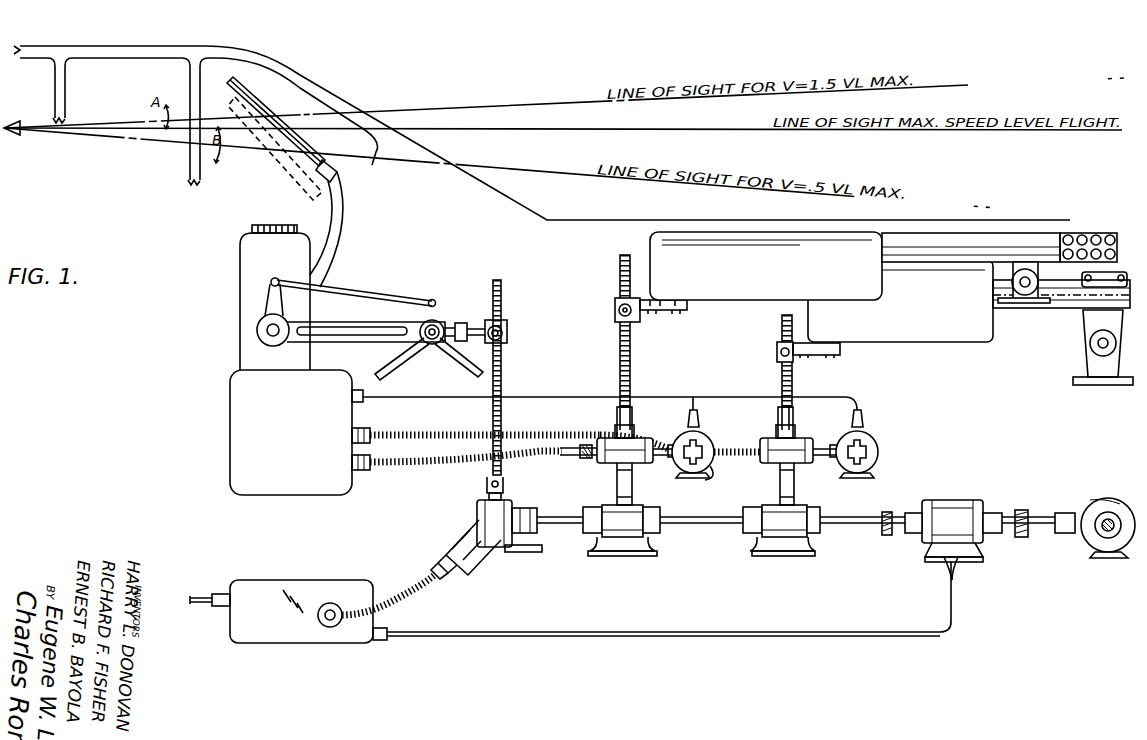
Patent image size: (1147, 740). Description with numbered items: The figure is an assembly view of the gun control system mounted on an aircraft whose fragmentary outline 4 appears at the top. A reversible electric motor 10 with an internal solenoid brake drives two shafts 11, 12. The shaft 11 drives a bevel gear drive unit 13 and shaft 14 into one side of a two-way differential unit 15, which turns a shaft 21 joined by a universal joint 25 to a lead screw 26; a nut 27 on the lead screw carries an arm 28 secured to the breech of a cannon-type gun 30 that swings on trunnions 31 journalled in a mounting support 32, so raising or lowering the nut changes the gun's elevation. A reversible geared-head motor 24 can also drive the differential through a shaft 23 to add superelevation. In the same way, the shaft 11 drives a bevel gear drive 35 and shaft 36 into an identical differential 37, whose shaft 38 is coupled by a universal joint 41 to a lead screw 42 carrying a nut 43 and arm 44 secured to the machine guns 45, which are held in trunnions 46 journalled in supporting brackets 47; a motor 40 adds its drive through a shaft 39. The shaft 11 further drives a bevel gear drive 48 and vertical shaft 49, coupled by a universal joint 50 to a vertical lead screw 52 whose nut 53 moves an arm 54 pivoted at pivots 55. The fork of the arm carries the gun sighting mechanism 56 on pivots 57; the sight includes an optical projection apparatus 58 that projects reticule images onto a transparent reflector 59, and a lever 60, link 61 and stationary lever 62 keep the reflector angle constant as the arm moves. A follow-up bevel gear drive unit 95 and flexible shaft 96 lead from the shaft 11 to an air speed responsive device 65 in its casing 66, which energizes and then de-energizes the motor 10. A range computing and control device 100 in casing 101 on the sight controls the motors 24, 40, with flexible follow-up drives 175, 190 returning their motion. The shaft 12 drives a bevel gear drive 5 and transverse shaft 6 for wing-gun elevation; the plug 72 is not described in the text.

The fragmentary outline of an aircraft 4 is at (306, 80).
The transparent reflector 59 is at (262, 108).
The gun sighting mechanism 56 is at (337, 302).
The optical projection apparatus 58 is at (240, 270).
The pivots 57 is at (255, 336).
The lever 60 is at (268, 282).
The link 61 is at (372, 290).
The stationary lever 62 is at (428, 315).
The pivots 55 is at (430, 347).
The arm 54 is at (440, 318).
The nut 53 is at (508, 330).
The vertical lead screw 52 is at (502, 388).
The range computing and control device 100 is at (270, 432).
The casing 101 is at (240, 444).
The flexible shaft follow-up drive 190 is at (460, 430).
The follow-up flexible cable drive 175 is at (430, 470).
The universal joint 50 is at (504, 484).
The vertical shaft 49 is at (487, 494).
The bevel gear drive 48 is at (517, 508).
The bevel gear drive unit 95 is at (484, 560).
The flexible shaft 96 is at (420, 595).
The air speed responsive device 65 is at (570, 615).
The casing 66 is at (346, 640).
The plug 72 is at (212, 592).
The shaft 11 is at (560, 527).
The bevel gear drive 35 is at (660, 554).
The shaft 36 is at (617, 485).
The two-way drive differential 37 is at (605, 471).
The shaft 38 is at (617, 425).
The universal joint 41 is at (633, 425).
The lead screw shaft 42 is at (633, 375).
The nut 43 is at (612, 310).
The arm 44 is at (663, 312).
The shaft 39 is at (672, 462).
The geared-head reversible electric motor 40 is at (712, 478).
The bevel gear drive unit 13 is at (816, 543).
The shaft 14 is at (794, 480).
The two-way drive differential unit 15 is at (771, 471).
The shaft 21 is at (778, 432).
The universal joint 25 is at (797, 425).
The lead screw shaft 26 is at (782, 379).
The nut 27 is at (778, 346).
The arm 28 is at (822, 356).
The shaft 23 is at (830, 458).
The reversible geared-head electric motor 24 is at (876, 440).
The reversible electric motor 10 is at (947, 500).
The shaft 12 is at (1040, 518).
The bevel gear drive 5 is at (1095, 517).
The shaft 6 is at (1102, 528).
The gun 30 is at (946, 338).
The guns 45 is at (756, 294).
The trunnions 46 is at (1038, 280).
The supporting brackets 47 is at (1016, 308).
The trunnions 31 is at (1096, 341).
The mounting support 32 is at (1090, 328).